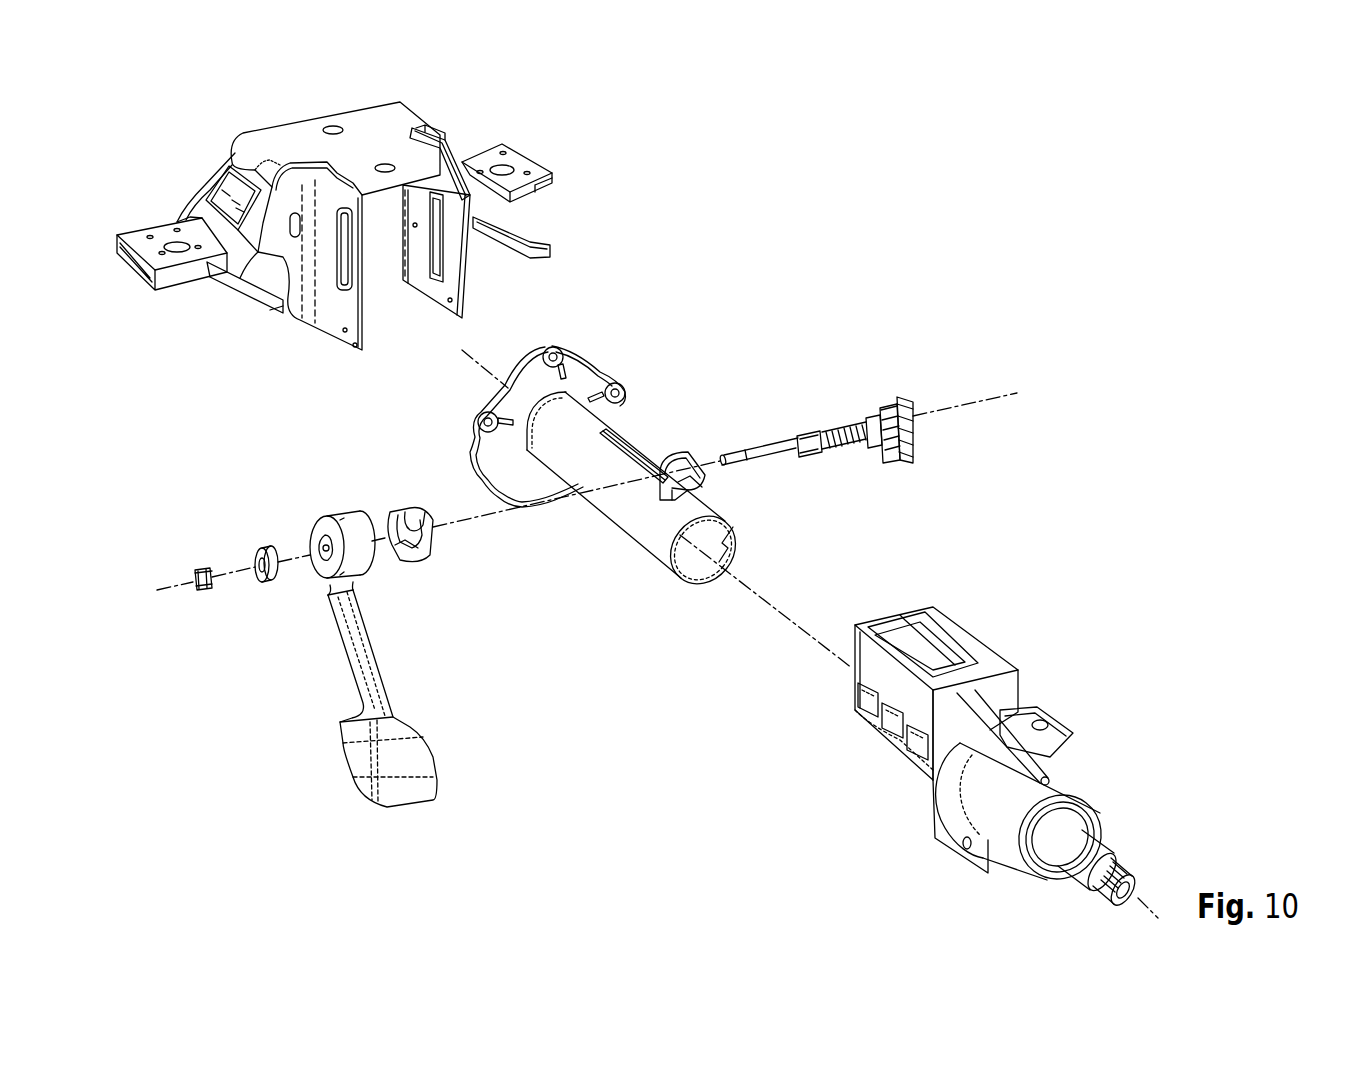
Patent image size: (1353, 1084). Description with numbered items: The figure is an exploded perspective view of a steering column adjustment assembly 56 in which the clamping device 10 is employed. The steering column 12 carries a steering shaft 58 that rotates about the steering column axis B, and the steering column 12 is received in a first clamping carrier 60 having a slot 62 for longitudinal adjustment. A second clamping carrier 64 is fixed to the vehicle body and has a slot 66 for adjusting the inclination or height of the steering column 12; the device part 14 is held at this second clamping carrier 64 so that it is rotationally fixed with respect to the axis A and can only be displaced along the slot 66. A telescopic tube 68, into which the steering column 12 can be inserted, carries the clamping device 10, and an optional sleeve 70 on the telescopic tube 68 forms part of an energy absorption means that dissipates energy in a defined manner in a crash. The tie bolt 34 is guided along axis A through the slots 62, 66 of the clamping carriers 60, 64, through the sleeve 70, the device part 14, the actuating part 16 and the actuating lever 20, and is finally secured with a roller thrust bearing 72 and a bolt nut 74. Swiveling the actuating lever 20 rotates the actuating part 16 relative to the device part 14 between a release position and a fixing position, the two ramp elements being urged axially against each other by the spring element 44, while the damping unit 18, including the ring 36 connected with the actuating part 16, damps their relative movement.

The clamping device 10 is at (267, 693).
The steering column 12 is at (970, 727).
The device part 14 is at (417, 510).
The actuating part 16 is at (353, 522).
The damping unit 18 is at (367, 500).
The actuating lever 20 is at (413, 762).
The tie bolt 34 is at (772, 448).
The ring 36 is at (360, 652).
The spring element 44 is at (833, 430).
The steering column adjustment assembly 56 is at (978, 195).
The steering shaft 58 is at (1100, 845).
The first clamping carrier 60 is at (883, 797).
The slot 62 is at (927, 657).
The second clamping carrier 64 is at (223, 328).
The slot 66 is at (333, 277).
The telescopic tube 68 is at (623, 520).
The sleeve 70 is at (678, 453).
The roller thrust bearing 72 is at (263, 543).
The bolt nut 74 is at (203, 567).